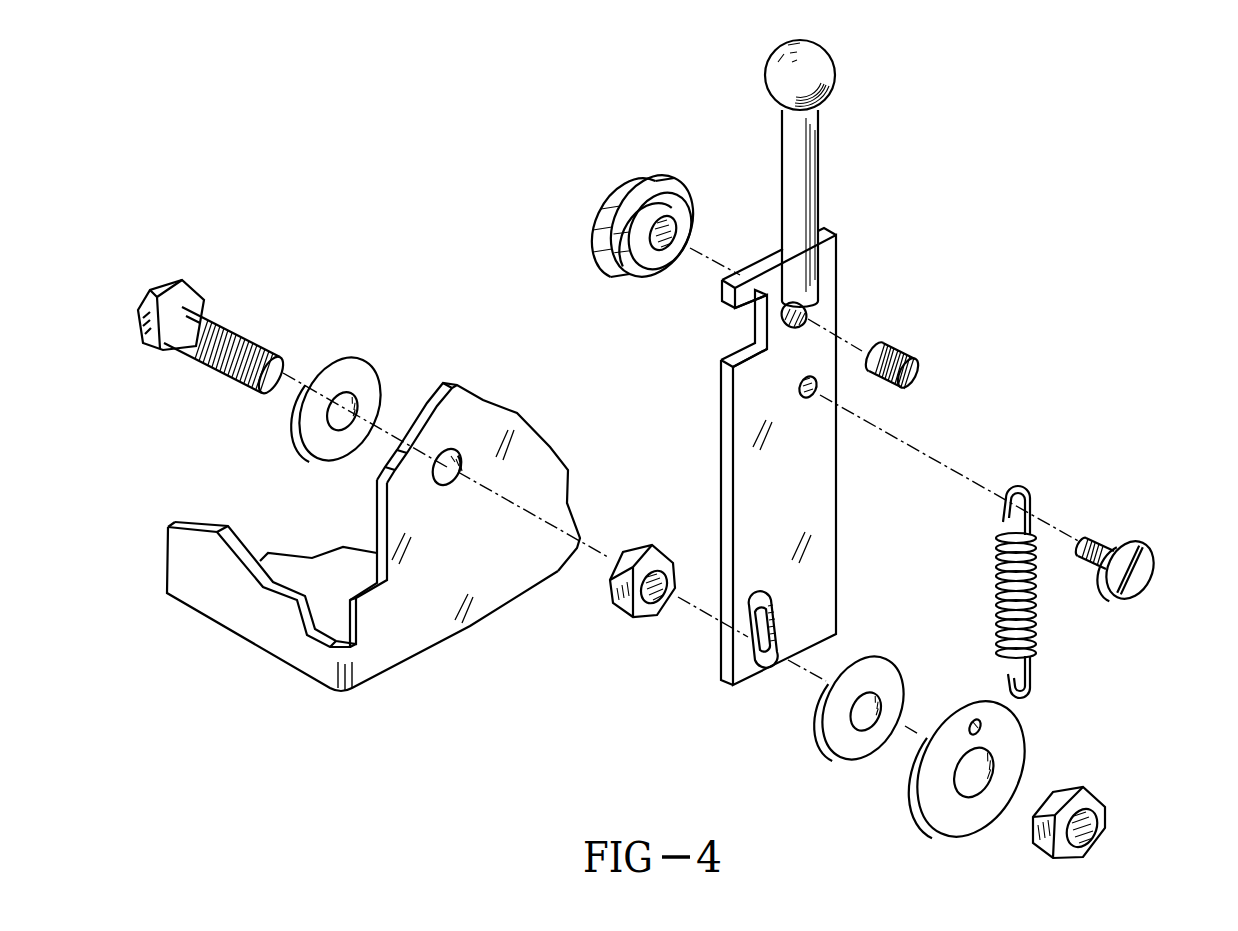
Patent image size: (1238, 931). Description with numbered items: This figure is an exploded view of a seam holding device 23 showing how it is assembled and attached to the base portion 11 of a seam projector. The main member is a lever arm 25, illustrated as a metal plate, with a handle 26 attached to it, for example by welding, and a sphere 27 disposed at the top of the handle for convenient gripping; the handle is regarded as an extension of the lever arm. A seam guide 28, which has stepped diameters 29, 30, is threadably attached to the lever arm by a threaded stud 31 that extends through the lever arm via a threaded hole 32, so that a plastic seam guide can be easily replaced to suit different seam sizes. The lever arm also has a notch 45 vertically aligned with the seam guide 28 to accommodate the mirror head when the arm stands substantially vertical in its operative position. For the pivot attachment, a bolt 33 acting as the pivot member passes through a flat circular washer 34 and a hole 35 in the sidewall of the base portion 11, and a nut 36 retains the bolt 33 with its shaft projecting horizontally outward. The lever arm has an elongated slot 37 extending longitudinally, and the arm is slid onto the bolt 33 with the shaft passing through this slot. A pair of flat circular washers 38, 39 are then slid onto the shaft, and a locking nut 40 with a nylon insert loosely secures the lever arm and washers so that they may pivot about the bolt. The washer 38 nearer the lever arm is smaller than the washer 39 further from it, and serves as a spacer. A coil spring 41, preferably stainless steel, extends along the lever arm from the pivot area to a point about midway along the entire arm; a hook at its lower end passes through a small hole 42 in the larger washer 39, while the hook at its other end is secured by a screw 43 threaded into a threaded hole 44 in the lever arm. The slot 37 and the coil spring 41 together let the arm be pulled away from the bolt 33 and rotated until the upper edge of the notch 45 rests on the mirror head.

The base portion 11 is at (222, 595).
The seam holding device 23 is at (955, 193).
The lever arm 25 is at (817, 567).
The handle 26 is at (800, 180).
The sphere 27 is at (819, 60).
The seam guide 28 is at (614, 200).
The stepped diameter 29 is at (662, 176).
The stepped diameter 30 is at (669, 200).
The threaded stud 31 is at (895, 340).
The threaded hole 32 is at (808, 312).
The bolt 33 is at (252, 338).
The flat circular washer 34 is at (362, 385).
The hole 35 is at (452, 462).
The nut 36 is at (644, 556).
The elongated slot 37 is at (752, 668).
The flat circular washer 38 is at (852, 743).
The flat circular washer 39 is at (953, 818).
The locking nut 40 is at (1072, 793).
The coil spring 41 is at (1036, 600).
The small hole 42 is at (977, 728).
The screw 43 is at (1112, 545).
The threaded hole 44 is at (812, 395).
The notch 45 is at (741, 327).